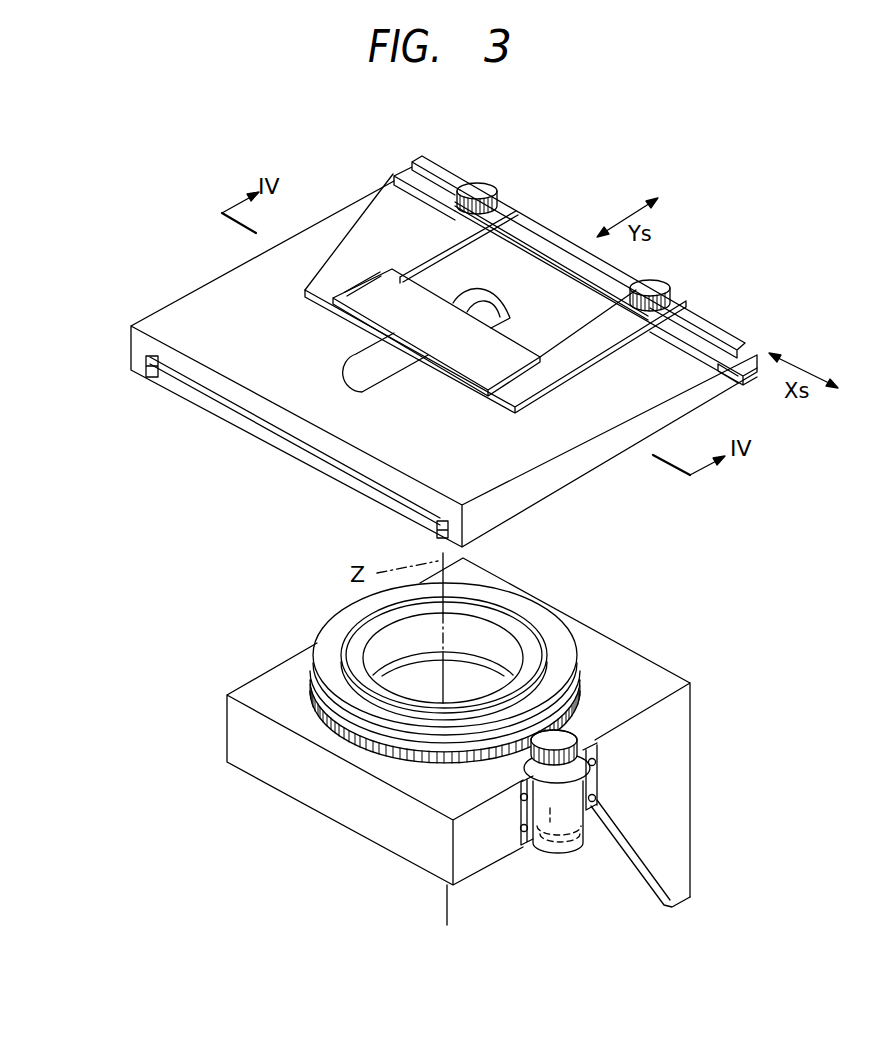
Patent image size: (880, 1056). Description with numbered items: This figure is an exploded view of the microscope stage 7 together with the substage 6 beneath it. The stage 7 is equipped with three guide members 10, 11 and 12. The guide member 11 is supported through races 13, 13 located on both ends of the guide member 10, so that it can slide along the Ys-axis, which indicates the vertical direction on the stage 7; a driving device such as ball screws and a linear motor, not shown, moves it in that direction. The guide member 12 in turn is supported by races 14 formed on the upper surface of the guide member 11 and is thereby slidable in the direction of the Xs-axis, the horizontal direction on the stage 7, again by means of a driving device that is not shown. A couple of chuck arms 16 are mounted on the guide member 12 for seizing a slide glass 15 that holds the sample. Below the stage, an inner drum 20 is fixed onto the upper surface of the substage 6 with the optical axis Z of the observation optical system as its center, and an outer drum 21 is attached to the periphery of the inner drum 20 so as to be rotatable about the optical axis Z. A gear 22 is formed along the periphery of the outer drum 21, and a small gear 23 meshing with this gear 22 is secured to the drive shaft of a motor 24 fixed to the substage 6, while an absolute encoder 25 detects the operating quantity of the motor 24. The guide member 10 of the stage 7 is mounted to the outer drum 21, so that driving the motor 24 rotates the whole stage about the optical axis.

The substage 6 is at (338, 808).
The stage 7 is at (541, 218).
The guide member 10 is at (210, 400).
The guide member 11 is at (163, 318).
The guide member 12 is at (703, 338).
The races 13 is at (150, 375).
The races 14 is at (425, 178).
The slide glass 15 is at (362, 300).
The chuck arms 16 is at (381, 253).
The inner drum 20 is at (507, 620).
The outer drum 21 is at (553, 636).
The gear 22 is at (312, 694).
The small gear 23 is at (580, 727).
The motor 24 is at (553, 813).
The absolute encoder 25 is at (572, 846).